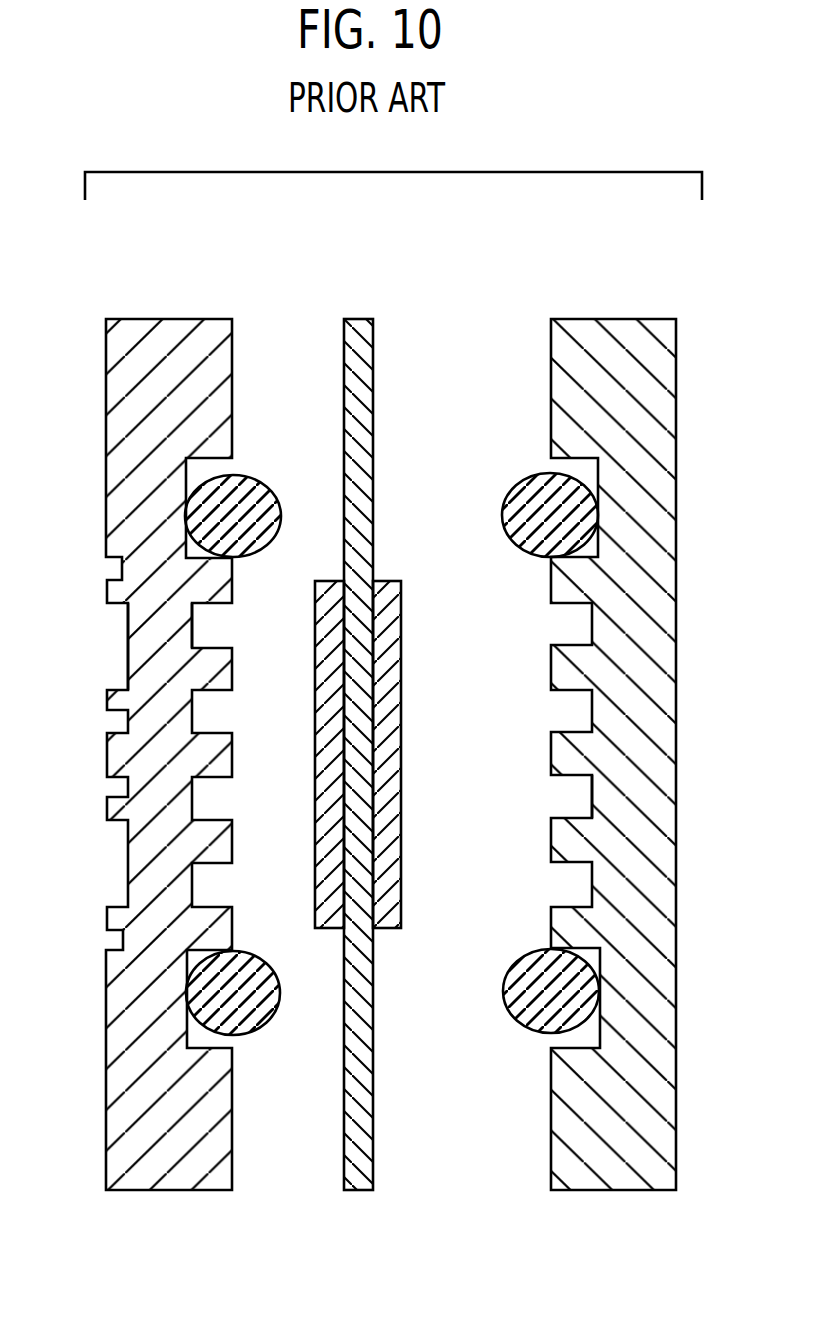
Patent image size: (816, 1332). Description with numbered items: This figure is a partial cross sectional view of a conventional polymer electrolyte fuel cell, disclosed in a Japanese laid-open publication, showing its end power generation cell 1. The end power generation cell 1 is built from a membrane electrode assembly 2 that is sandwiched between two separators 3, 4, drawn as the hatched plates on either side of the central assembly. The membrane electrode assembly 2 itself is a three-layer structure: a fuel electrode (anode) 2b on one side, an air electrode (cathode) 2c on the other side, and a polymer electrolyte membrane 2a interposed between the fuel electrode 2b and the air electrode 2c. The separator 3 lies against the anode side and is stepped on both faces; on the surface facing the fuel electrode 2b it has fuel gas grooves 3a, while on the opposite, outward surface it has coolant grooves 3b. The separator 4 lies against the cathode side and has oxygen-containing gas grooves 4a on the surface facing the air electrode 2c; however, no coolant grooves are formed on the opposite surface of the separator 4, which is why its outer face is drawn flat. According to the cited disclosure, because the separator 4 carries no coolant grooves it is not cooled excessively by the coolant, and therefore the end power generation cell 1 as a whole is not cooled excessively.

The end power generation cell 1 is at (533, 244).
The membrane electrode assembly 2 is at (409, 754).
The polymer electrolyte membrane 2a is at (355, 738).
The fuel electrode (anode) 2b is at (330, 689).
The air electrode (cathode) 2c is at (462, 685).
The separator 3 is at (168, 316).
The fuel gas grooves 3a is at (215, 622).
The coolant grooves 3b is at (121, 652).
The separator 4 is at (613, 316).
The oxygen-containing gas grooves 4a is at (562, 790).